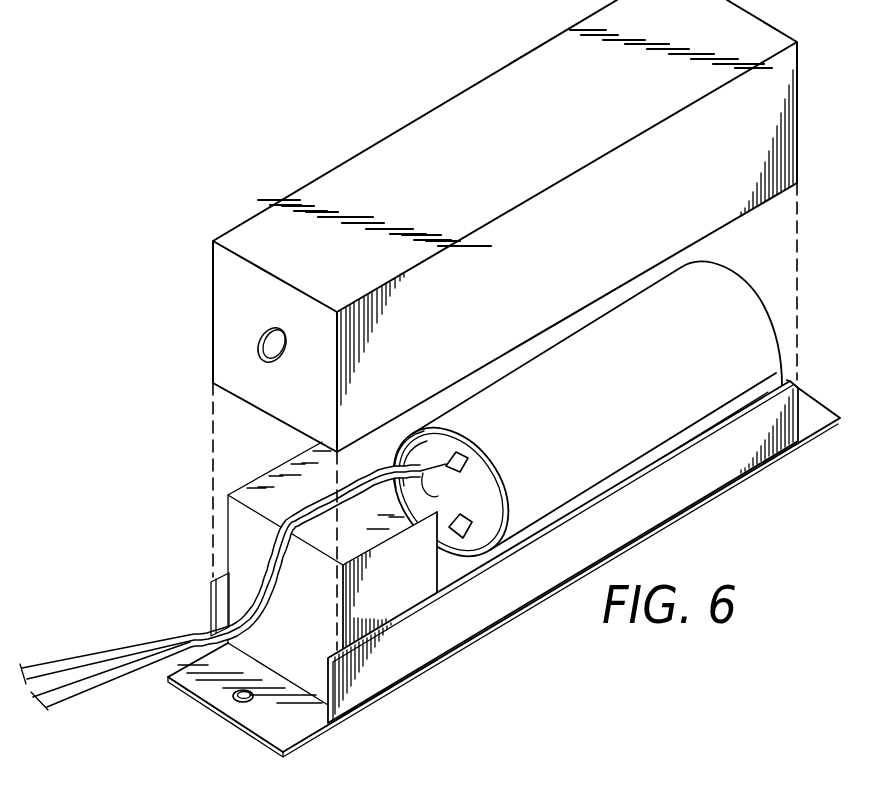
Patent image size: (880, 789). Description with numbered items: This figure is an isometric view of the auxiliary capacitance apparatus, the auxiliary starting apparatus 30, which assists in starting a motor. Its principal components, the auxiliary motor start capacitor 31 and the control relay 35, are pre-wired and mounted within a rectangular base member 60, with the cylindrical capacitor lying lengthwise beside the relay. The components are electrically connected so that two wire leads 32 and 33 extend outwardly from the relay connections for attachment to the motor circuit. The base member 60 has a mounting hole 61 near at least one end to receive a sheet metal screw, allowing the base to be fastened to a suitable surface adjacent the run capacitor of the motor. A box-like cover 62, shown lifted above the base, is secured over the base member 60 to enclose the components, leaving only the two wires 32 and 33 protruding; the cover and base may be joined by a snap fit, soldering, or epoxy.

The auxiliary starting apparatus 30 is at (686, 526).
The auxiliary motor start capacitor 31 is at (630, 430).
The wire lead 32 is at (78, 690).
The wire lead 33 is at (108, 654).
The control relay 35 is at (407, 593).
The base member 60 is at (453, 632).
The mounting hole 61 is at (236, 699).
The cover 62 is at (572, 278).